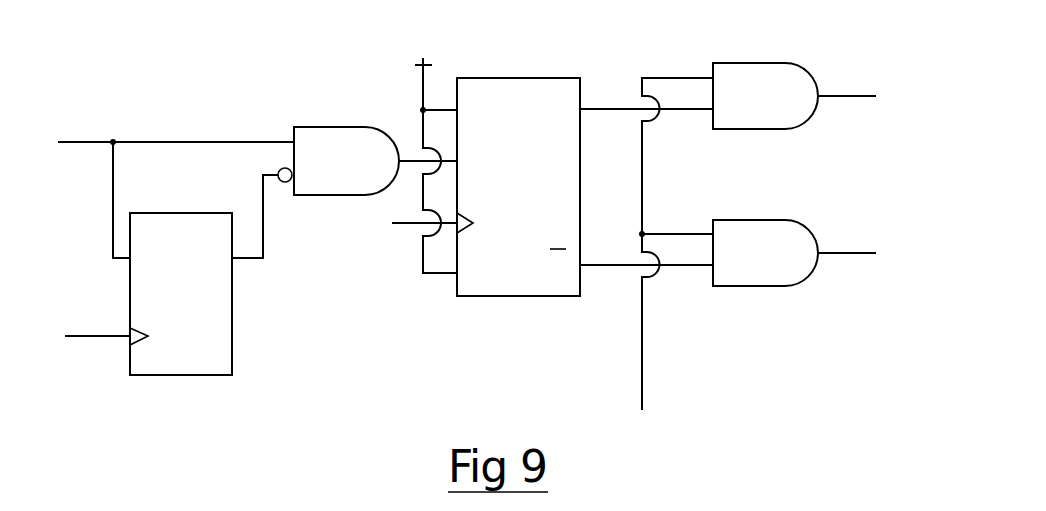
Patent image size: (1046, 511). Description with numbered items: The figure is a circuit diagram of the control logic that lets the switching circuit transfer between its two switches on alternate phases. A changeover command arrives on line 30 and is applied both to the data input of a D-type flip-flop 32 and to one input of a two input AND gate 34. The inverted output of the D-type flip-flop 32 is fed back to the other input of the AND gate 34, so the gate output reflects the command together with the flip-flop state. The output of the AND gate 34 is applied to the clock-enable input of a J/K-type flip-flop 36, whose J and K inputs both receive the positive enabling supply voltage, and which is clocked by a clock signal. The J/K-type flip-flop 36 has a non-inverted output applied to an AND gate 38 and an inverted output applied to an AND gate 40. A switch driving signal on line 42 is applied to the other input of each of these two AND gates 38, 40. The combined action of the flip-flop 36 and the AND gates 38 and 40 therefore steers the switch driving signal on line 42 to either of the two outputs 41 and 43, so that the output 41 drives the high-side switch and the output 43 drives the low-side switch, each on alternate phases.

The line 30 is at (87, 143).
The D-type flip-flop 32 is at (232, 295).
The two input AND gate 34 is at (328, 127).
The J/K-type flip-flop 36 is at (517, 78).
The AND gate 38 is at (772, 63).
The AND gate 40 is at (772, 220).
The output 41 is at (845, 96).
The line 42 is at (643, 352).
The output 43 is at (845, 253).